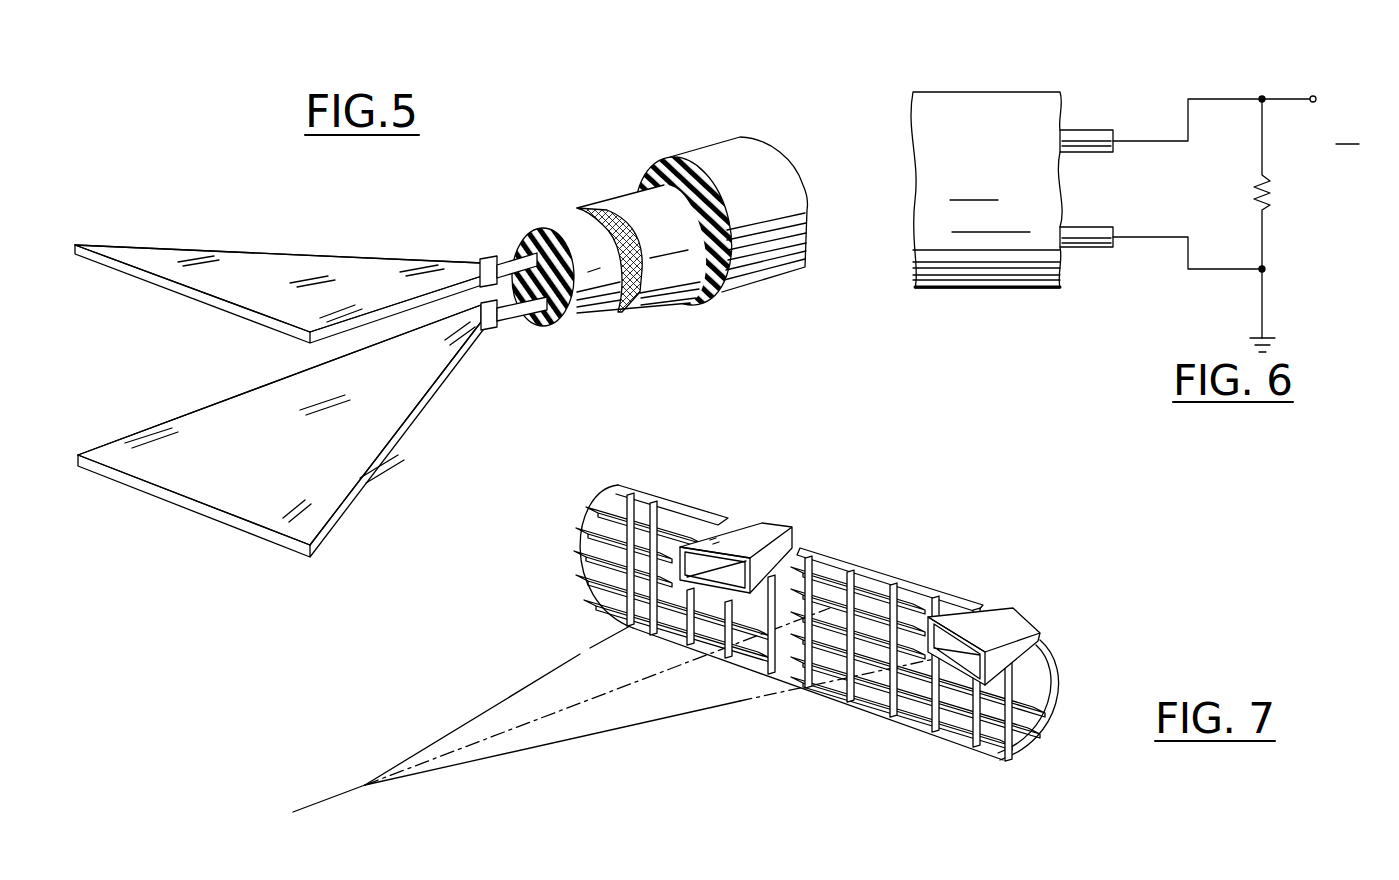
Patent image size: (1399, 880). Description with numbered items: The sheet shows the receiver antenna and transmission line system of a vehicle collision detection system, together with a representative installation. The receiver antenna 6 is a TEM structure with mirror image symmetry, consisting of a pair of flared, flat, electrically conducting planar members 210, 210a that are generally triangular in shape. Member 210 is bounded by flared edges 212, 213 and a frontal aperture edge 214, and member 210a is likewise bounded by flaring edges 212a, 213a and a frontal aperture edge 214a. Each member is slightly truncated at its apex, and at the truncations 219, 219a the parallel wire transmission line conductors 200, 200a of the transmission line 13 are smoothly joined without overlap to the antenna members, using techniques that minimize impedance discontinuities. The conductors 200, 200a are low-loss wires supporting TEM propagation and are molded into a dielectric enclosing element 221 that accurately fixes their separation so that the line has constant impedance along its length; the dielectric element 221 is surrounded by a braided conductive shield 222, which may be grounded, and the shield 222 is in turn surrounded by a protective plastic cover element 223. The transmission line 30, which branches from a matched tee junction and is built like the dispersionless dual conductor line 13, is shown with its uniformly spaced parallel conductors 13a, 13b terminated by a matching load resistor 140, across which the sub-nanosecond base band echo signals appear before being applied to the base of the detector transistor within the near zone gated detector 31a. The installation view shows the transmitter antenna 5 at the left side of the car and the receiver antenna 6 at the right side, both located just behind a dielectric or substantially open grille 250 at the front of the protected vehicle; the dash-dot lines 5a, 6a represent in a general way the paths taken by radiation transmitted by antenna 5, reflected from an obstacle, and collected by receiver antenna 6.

In FIG. 7, the transmitter antenna 5 is at (1035, 630).
In FIG. 7, the dash-dot line 5a is at (622, 733).
In FIG. 5, the receiver antenna 6 is at (228, 214).
In FIG. 7, the receiver antenna 6 is at (752, 532).
In FIG. 7, the dash-dot line 6a is at (470, 718).
In FIG. 5, the transmission line 13 is at (586, 171).
In FIG. 6, the parallel conductor 13a is at (1088, 128).
In FIG. 6, the parallel conductor 13b is at (1093, 249).
In FIG. 6, the transmission line 30 is at (1042, 84).
In FIG. 6, the near zone gated detector 31a is at (1316, 97).
In FIG. 6, the matching load resistor 140 is at (1268, 204).
In FIG. 5, the transmission line conductor 200 is at (502, 258).
In FIG. 5, the transmission line conductor 200a is at (522, 322).
In FIG. 5, the planar member 210 is at (303, 262).
In FIG. 5, the planar member 210a is at (343, 493).
In FIG. 5, the flared edge 212 is at (176, 247).
In FIG. 5, the flaring edge 212a is at (215, 407).
In FIG. 5, the flared edge 213 is at (333, 334).
In FIG. 5, the flaring edge 213a is at (437, 403).
In FIG. 5, the frontal aperture edge 214 is at (180, 276).
In FIG. 5, the frontal aperture edge 214a is at (168, 496).
In FIG. 5, the truncation 219 is at (486, 266).
In FIG. 5, the truncation 219a is at (490, 328).
In FIG. 5, the dielectric enclosing element 221 is at (597, 318).
In FIG. 5, the conductive shield 222 is at (655, 300).
In FIG. 5, the protective plastic cover element 223 is at (778, 282).
In FIG. 7, the grille 250 is at (872, 570).